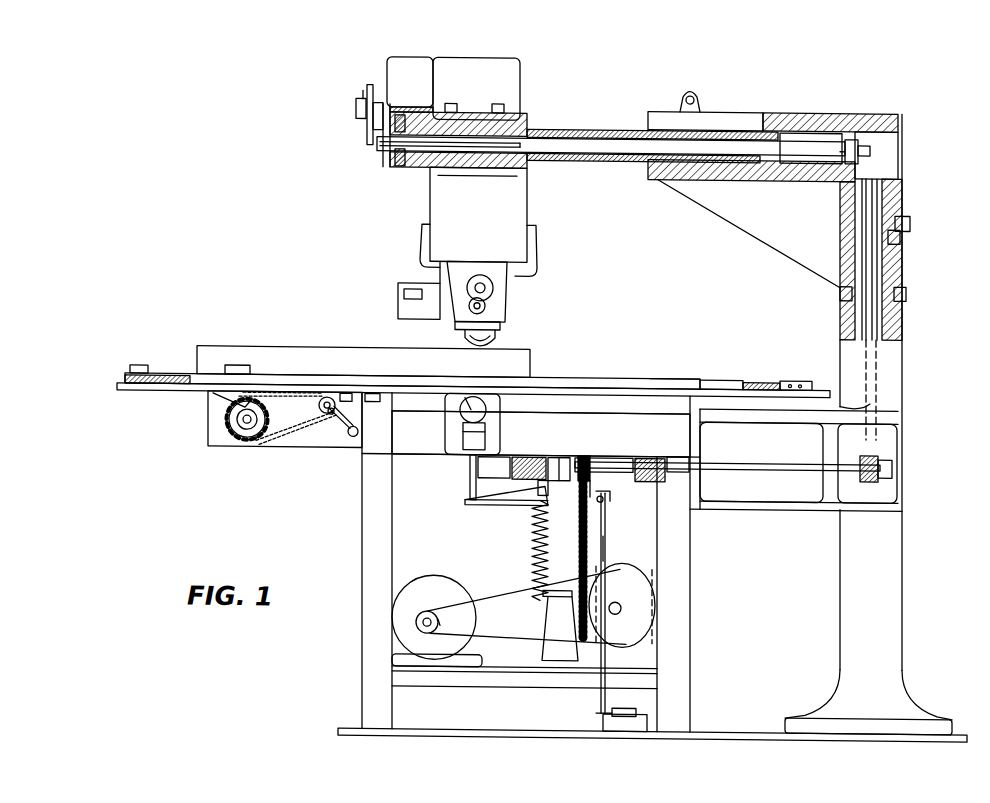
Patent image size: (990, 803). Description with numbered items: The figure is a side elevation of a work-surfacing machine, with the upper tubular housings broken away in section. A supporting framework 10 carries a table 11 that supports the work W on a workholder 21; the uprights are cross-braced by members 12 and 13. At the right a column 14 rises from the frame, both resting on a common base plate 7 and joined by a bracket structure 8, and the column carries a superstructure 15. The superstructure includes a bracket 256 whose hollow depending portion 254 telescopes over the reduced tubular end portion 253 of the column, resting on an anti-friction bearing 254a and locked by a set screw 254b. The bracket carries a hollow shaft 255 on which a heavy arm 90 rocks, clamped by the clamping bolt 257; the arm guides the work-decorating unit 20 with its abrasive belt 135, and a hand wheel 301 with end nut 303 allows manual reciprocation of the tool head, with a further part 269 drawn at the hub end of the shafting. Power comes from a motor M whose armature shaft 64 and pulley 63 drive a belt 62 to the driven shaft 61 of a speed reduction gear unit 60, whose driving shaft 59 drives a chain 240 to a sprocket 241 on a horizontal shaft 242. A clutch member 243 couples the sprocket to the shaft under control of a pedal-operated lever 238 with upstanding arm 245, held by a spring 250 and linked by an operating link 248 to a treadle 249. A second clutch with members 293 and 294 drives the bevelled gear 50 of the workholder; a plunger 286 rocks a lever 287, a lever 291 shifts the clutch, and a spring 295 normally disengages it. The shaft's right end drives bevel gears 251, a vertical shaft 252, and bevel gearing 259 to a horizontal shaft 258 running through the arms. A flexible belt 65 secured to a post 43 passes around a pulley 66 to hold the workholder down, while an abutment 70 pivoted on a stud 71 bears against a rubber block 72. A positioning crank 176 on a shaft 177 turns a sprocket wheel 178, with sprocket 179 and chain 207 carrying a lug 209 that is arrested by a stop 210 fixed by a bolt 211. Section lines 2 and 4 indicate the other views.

The section line 2— 2 is at (470, 58).
The section line 4— 4 is at (125, 349).
The base plate 7 is at (746, 730).
The bracket structure 8 is at (726, 409).
The supporting framework 10 is at (372, 498).
The table 11 is at (620, 387).
The cross-brace member 12 is at (537, 434).
The lower cross-framing member 13 is at (488, 688).
The column 14 is at (858, 390).
The superstructure 15 is at (714, 53).
The work-decorating unit 20 is at (508, 306).
The workholder 21 is at (525, 360).
The post 43 is at (797, 378).
The bevelled gear 50 is at (460, 455).
The driving shaft 59 is at (588, 588).
The speed reduction gear unit 60 is at (656, 583).
The driven shaft 61 is at (615, 613).
The belt 62 is at (506, 592).
The pulley 63 is at (443, 623).
The armature shaft 64 is at (424, 633).
The flexible belt 65 is at (760, 380).
The pulley 66 is at (142, 369).
The abutment 70 is at (683, 377).
The stud 71 is at (238, 368).
The rubber block 72 is at (716, 378).
The arm 90 is at (508, 208).
The abrasive belt 135 is at (498, 340).
The crank 176 is at (346, 438).
The shaft 177 is at (329, 417).
The sprocket wheel 178 is at (319, 406).
The sprocket 179 is at (240, 441).
The chain 207 is at (290, 432).
The lug 209 is at (300, 392).
The stop 210 is at (346, 394).
The bolt 211 is at (375, 394).
The pedal-operated lever 238 is at (610, 505).
The drive chain 240 is at (589, 519).
The sprocket 241 is at (592, 457).
The horizontal shaft 242 is at (598, 458).
The clutch member 243 is at (645, 457).
The upstanding arm 245 is at (598, 505).
The operating link 248 is at (607, 536).
The treadle 249 is at (602, 712).
The spring 250 is at (666, 455).
The bevel gears 251 is at (880, 476).
The vertical shaft 252 is at (840, 290).
The reduced tubular end portion 253 is at (890, 232).
The hollow depending portion 254 is at (840, 200).
The anti-friction bearing 254a is at (906, 290).
The set screw 254b is at (910, 218).
The hollow shaft 255 is at (583, 137).
The bracket 256 is at (505, 108).
The clamping bolt 257 is at (700, 100).
The horizontal shaft 258 is at (602, 129).
The bevel gearing 259 is at (864, 152).
The bushing 269 is at (398, 167).
The plunger 286 is at (470, 488).
The lever 287 is at (500, 500).
The lever 291 is at (548, 490).
The clutch member 293 is at (553, 457).
The driving member 294 is at (525, 457).
The spring 295 is at (544, 546).
The hand wheel 301 is at (370, 131).
The end nut 303 is at (358, 101).
The motor M is at (428, 590).
The work W is at (300, 349).